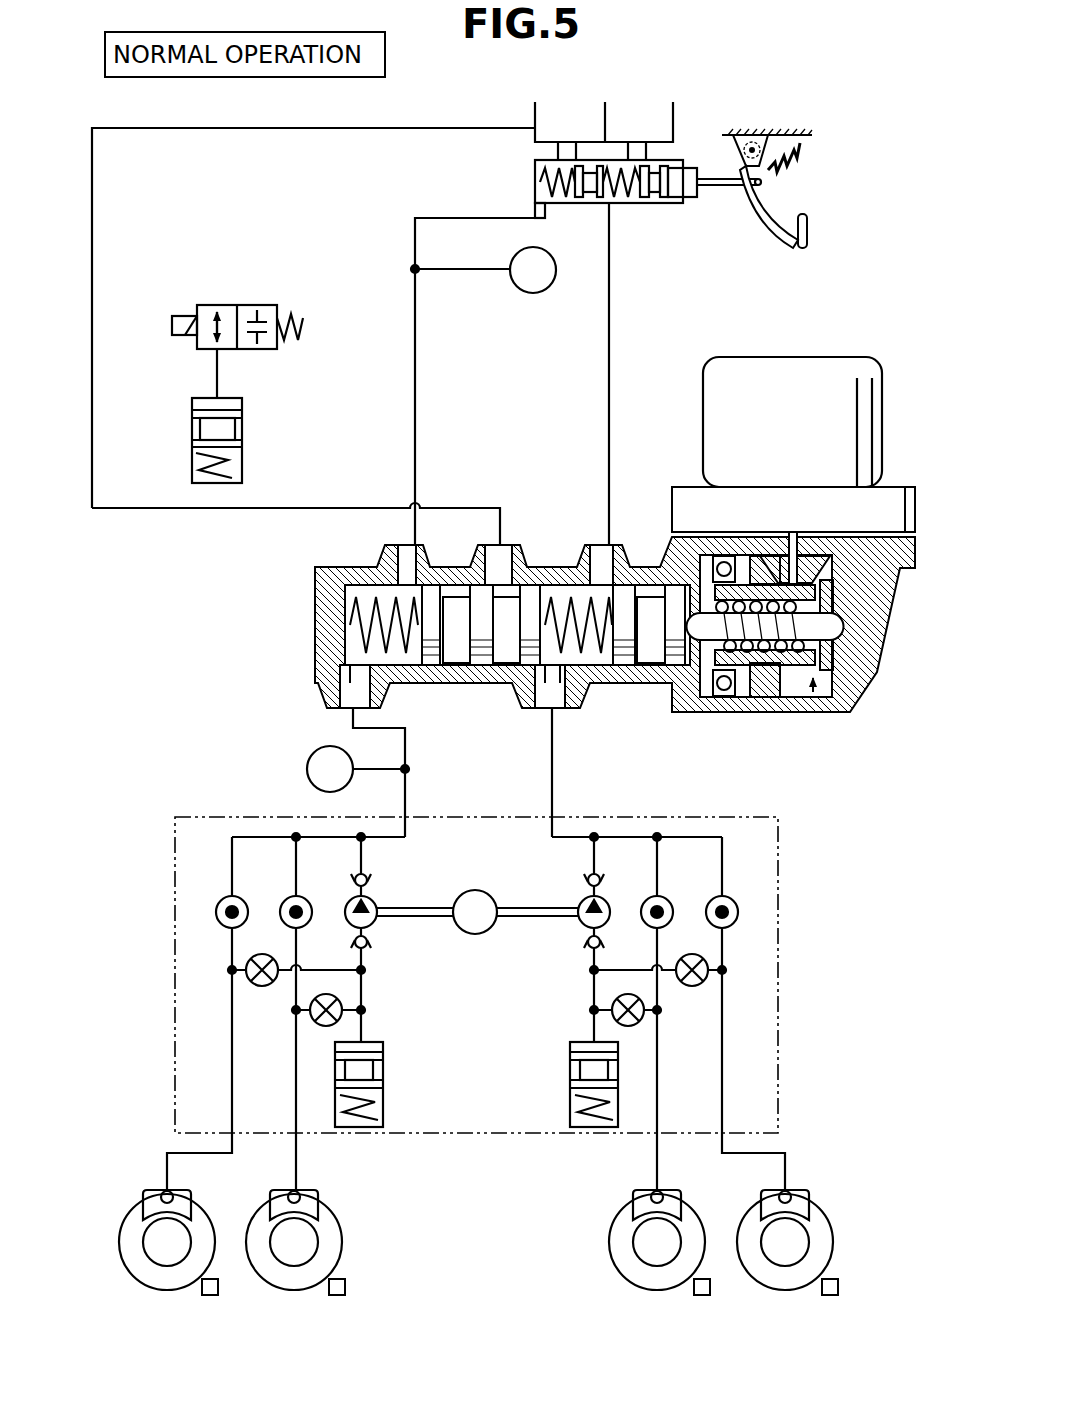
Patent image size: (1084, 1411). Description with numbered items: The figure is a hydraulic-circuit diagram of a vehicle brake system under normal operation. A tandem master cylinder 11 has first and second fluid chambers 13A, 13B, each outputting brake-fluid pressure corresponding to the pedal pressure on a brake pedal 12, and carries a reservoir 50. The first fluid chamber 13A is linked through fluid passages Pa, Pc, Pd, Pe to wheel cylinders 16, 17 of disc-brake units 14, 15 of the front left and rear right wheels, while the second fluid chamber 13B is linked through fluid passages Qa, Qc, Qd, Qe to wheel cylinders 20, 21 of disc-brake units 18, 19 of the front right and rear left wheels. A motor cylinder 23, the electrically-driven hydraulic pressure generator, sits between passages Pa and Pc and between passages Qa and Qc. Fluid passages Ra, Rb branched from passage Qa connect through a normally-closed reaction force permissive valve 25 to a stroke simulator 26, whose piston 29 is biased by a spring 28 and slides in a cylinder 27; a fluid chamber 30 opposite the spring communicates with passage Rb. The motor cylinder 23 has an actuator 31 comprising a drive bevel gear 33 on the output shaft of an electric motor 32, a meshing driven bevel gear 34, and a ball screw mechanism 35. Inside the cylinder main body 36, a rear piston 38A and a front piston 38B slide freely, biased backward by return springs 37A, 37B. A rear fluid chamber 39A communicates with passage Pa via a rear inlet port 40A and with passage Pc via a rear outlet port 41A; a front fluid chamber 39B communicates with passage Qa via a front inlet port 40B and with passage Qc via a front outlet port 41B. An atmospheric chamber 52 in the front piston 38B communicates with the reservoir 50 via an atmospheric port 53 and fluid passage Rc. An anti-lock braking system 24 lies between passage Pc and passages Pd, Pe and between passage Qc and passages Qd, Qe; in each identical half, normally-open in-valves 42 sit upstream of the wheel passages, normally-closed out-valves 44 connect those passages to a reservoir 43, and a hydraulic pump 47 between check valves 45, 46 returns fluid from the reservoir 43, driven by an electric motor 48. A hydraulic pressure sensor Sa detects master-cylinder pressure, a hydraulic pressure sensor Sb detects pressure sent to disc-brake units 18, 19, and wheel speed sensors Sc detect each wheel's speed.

The tandem master cylinder 11 is at (598, 208).
The brake pedal 12 is at (805, 240).
The first fluid chamber 13A is at (622, 205).
The second fluid chamber 13B is at (560, 205).
The disc-brake unit 14 is at (622, 1230).
The disc-brake unit 15 is at (819, 1217).
The wheel cylinder 16 is at (648, 1198).
The wheel cylinder 17 is at (795, 1200).
The disc-brake unit 18 is at (334, 1231).
The disc-brake unit 19 is at (140, 1213).
The wheel cylinder 20 is at (305, 1198).
The wheel cylinder 21 is at (120, 1215).
The motor cylinder 23 is at (552, 655).
The anti-lock braking system 24 is at (476, 978).
The reaction force permissive valve 25 is at (203, 302).
The stroke simulator 26 is at (234, 425).
The cylinder 27 is at (243, 460).
The spring 28 is at (202, 472).
The piston 29 is at (205, 428).
The fluid chamber 30 is at (228, 405).
The actuator 31 is at (813, 700).
The electric motor 32 is at (866, 460).
The drive bevel gear 33 is at (805, 552).
The driven bevel gear 34 is at (768, 692).
The ball screw mechanism 35 is at (724, 692).
The cylinder main body 36 is at (575, 590).
The return spring 37A is at (600, 640).
The return spring 37B is at (395, 640).
The rear piston 38A is at (655, 605).
The front piston 38B is at (455, 598).
The rear fluid chamber 39A is at (580, 598).
The front fluid chamber 39B is at (362, 600).
The rear inlet port 40A is at (608, 565).
The front inlet port 40B is at (408, 565).
The rear outlet port 41A is at (545, 706).
The front outlet port 41B is at (350, 705).
The in-valve 42 is at (222, 896).
The reservoir 43 is at (390, 1092).
The out-valve 44 is at (262, 986).
The check valve 45 is at (367, 945).
The check valve 46 is at (368, 875).
The hydraulic pump 47 is at (373, 900).
The electric motor 48 is at (475, 934).
The reservoir 50 is at (673, 117).
The atmospheric chamber 52 is at (508, 600).
The atmospheric port 53 is at (498, 545).
The fluid passage Ra is at (312, 268).
The fluid passage Rb is at (216, 380).
The fluid passage Rc is at (92, 197).
The fluid passage Qa is at (414, 422).
The fluid passage Qc is at (405, 745).
The fluid passage Qd is at (296, 1160).
The fluid passage Qe is at (232, 1160).
The fluid passage Pa is at (610, 388).
The fluid passage Pc is at (552, 752).
The fluid passage Pd is at (657, 1140).
The fluid passage Pe is at (722, 1142).
The hydraulic pressure sensor Sa is at (538, 292).
The hydraulic pressure sensor Sb is at (306, 770).
The wheel speed sensor Sc is at (235, 1275).